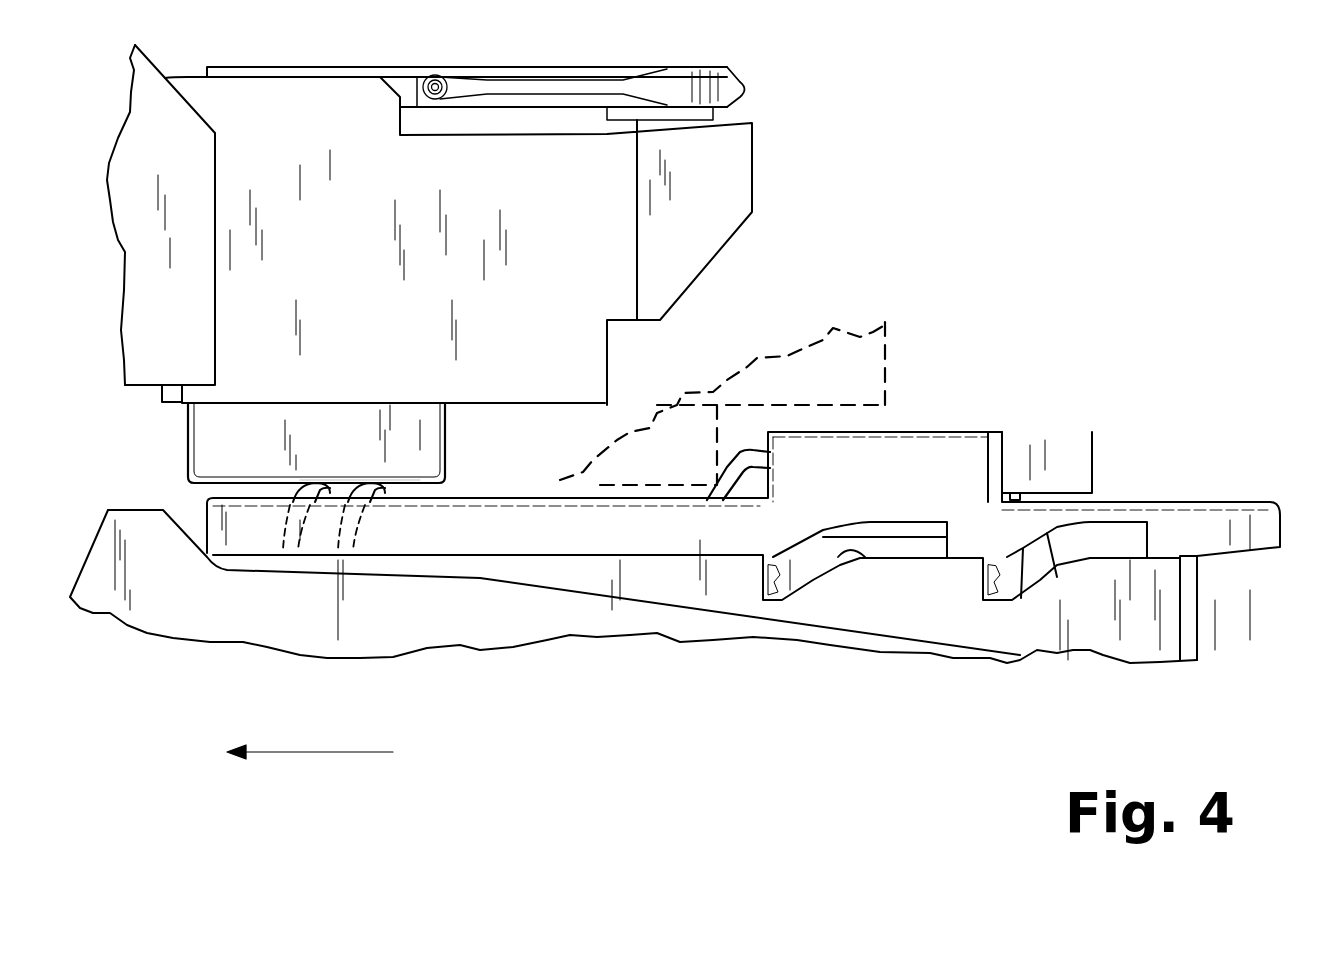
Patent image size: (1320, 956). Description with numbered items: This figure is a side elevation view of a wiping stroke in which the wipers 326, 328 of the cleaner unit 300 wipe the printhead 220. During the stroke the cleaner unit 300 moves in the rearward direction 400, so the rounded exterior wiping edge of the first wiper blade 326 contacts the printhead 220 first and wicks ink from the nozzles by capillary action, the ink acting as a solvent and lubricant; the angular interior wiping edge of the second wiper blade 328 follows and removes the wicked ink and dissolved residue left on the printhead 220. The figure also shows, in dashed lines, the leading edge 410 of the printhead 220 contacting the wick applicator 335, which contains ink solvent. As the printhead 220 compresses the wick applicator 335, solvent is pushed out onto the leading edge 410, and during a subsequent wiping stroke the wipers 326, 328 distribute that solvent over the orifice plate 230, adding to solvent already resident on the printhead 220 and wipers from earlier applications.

The printhead 220 is at (446, 427).
The orifice plate 230 is at (413, 489).
The cleaner unit 300 is at (730, 735).
The first wiper blade 326 is at (435, 478).
The second wiper blade 328 is at (433, 478).
The wick applicator 335 is at (740, 455).
The rearward direction 400 is at (338, 752).
The leading edge 410 is at (710, 477).